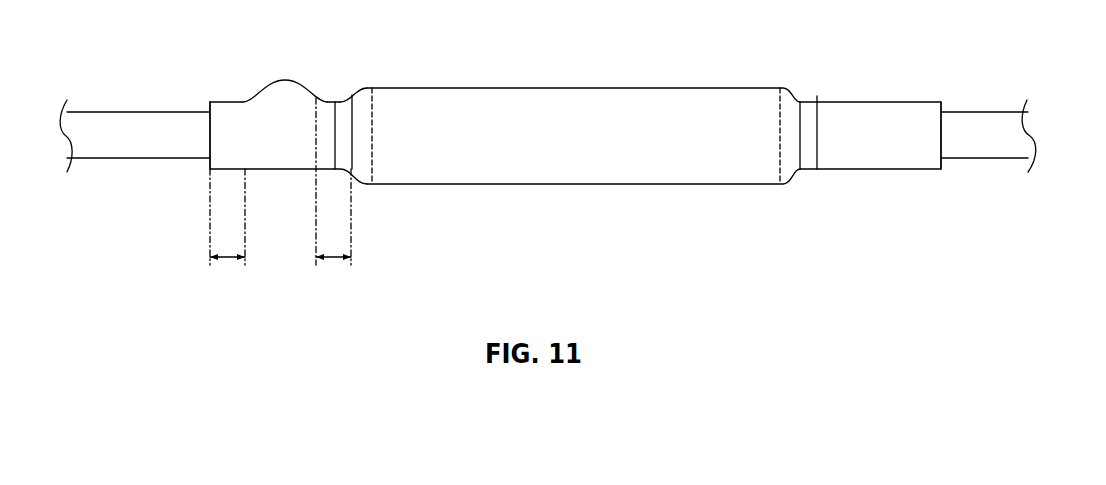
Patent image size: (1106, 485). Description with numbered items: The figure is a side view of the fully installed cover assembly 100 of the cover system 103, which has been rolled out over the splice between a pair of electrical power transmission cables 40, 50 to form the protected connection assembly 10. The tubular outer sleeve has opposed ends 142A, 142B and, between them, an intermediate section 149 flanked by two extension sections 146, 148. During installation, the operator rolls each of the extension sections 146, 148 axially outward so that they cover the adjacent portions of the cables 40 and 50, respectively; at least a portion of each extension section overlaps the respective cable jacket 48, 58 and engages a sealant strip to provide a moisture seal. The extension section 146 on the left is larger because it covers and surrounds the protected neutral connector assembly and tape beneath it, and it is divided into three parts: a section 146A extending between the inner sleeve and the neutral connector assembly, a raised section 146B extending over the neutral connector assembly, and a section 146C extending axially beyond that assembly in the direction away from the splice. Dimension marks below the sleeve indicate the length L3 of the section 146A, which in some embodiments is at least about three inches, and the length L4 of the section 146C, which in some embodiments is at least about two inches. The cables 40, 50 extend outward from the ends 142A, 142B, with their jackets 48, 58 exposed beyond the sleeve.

The connection assembly 10 is at (570, 56).
The cover system 103 is at (730, 44).
The cover assembly 100 is at (638, 192).
The intermediate section 149 is at (485, 103).
The extension section 148 is at (880, 107).
The extension section 146 is at (260, 126).
The section 146A is at (231, 100).
The section 146B is at (286, 80).
The section 146C is at (326, 100).
The end 142A is at (208, 133).
The end 142B is at (945, 135).
The jacket 48 is at (115, 126).
The cable 40 is at (118, 159).
The jacket 58 is at (985, 122).
The cable 50 is at (977, 172).
The length L3 is at (224, 266).
The length L4 is at (334, 266).